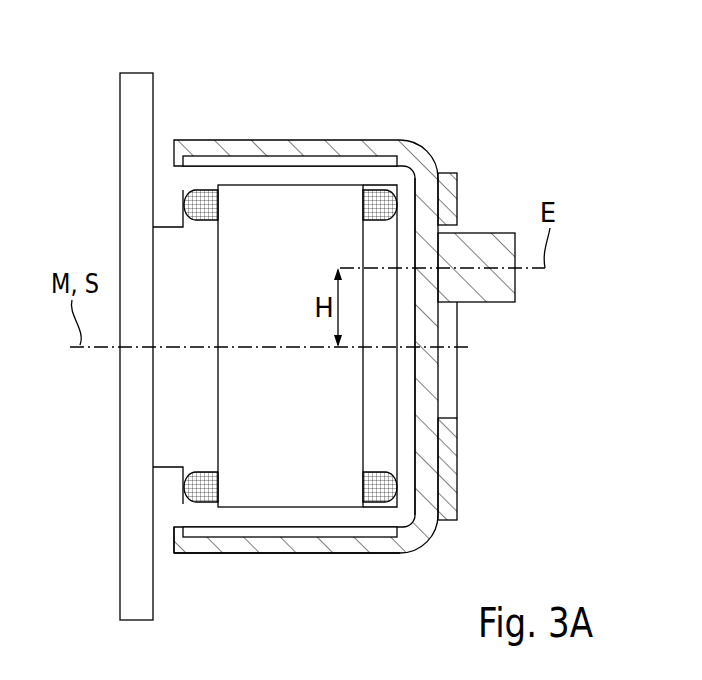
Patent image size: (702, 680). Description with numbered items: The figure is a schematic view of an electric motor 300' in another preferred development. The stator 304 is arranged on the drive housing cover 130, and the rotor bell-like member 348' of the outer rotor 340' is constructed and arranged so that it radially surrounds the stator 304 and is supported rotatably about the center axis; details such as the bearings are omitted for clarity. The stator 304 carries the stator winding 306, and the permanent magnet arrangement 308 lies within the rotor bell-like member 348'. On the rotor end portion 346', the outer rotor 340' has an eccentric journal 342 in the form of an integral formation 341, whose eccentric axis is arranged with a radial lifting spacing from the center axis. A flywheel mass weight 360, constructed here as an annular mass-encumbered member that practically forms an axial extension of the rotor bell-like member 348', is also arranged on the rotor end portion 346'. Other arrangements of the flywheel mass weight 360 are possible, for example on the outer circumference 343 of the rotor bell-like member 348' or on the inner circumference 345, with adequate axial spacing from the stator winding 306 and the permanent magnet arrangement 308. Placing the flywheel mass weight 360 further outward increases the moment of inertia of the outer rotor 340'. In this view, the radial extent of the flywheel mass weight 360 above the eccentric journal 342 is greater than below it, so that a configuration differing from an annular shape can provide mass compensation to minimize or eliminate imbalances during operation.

The drive housing cover 130 is at (132, 225).
The electric motor 300' is at (334, 328).
The stator 304 is at (255, 195).
The stator winding 306 is at (196, 190).
The permanent magnet arrangement 308 is at (345, 152).
The outer rotor 340' is at (334, 295).
The integral formation 341 is at (500, 292).
The eccentric journal 342 is at (482, 200).
The outer circumference 343 is at (302, 568).
The inner circumference 345 is at (172, 517).
The rotor end portion 346' is at (484, 346).
The rotor bell-like member 348' is at (306, 313).
The flywheel mass weight 360 is at (448, 487).